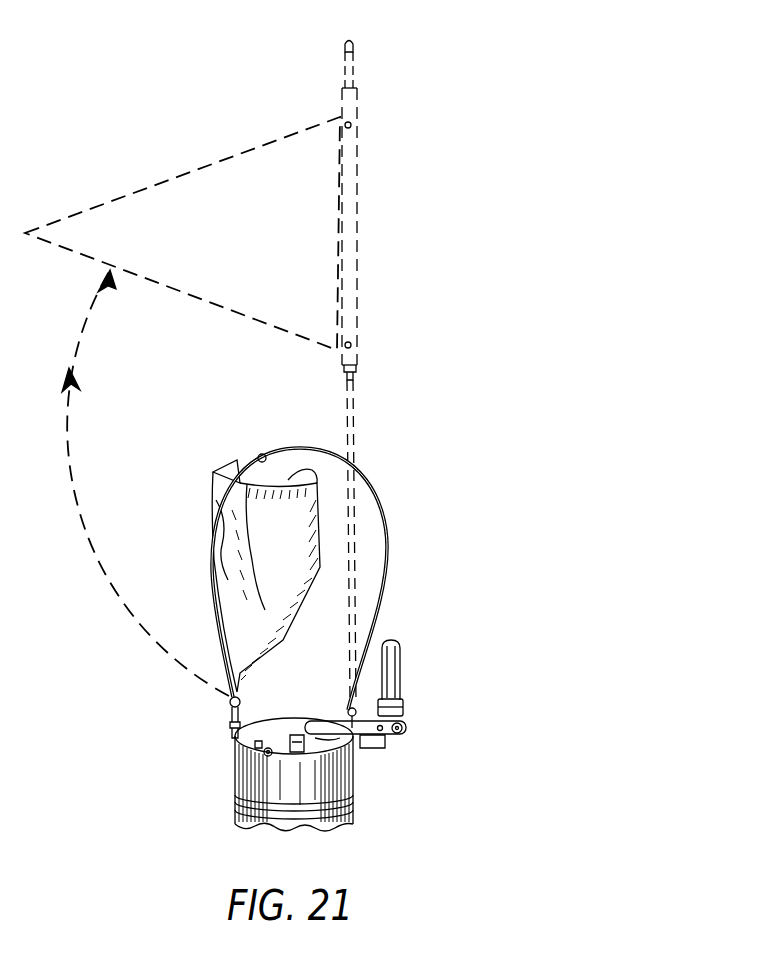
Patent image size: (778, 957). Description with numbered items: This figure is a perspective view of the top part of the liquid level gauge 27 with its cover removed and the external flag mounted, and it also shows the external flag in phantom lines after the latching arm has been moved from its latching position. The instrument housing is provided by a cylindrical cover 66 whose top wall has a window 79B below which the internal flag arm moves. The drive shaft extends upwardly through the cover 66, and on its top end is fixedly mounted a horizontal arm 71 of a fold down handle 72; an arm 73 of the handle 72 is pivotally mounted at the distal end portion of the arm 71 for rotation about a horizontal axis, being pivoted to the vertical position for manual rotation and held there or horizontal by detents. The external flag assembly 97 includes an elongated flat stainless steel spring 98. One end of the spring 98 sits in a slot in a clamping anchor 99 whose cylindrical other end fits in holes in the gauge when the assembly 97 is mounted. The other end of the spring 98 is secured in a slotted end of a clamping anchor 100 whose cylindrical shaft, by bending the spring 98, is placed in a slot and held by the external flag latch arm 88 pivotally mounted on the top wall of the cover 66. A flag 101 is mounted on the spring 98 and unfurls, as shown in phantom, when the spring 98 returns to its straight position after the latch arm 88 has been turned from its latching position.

The flag 101 is at (230, 158).
The elongated flat stainless steel spring 98 is at (388, 544).
The external flag assembly 97 is at (393, 463).
The liquid level gauge 27 is at (455, 600).
The arm 73 is at (402, 657).
The clamping anchor 99 is at (401, 703).
The horizontal arm 71 is at (392, 738).
The fold down handle 72 is at (370, 750).
The clamping anchor 100 is at (228, 708).
The external flag latch arm 88 is at (237, 742).
The cylindrical cover 66 is at (237, 772).
The window 79B is at (237, 802).